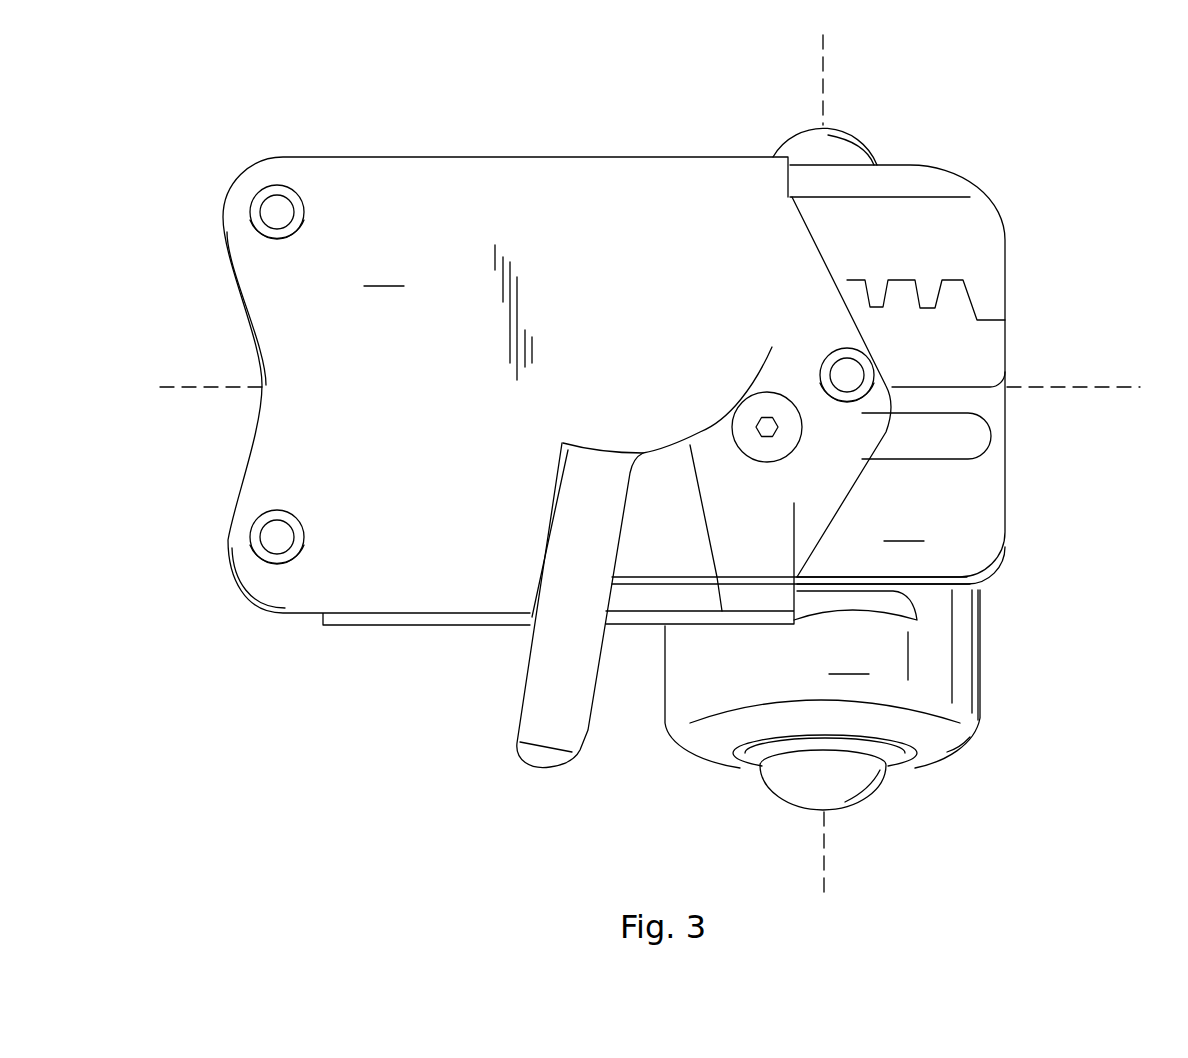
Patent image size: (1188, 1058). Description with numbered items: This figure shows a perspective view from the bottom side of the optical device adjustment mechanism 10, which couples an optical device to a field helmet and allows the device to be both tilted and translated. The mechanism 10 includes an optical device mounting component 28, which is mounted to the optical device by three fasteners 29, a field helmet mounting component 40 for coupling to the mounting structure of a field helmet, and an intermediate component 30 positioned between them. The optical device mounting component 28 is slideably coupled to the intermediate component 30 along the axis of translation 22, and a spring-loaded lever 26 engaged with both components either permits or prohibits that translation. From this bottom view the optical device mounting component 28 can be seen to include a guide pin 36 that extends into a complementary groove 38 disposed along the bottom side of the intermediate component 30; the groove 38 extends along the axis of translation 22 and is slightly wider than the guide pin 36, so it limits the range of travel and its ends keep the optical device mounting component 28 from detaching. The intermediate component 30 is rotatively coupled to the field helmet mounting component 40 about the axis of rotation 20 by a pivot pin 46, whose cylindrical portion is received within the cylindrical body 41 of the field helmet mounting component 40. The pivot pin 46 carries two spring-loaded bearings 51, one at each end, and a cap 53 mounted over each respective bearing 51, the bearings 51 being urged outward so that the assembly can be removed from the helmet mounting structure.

The mechanism 10 is at (673, 477).
The axis of rotation 20 is at (824, 58).
The axis of translation 22 is at (1098, 390).
The spring-loaded lever 26 is at (521, 691).
The optical device mounting component 28 is at (508, 391).
The fasteners 29 is at (262, 200).
The intermediate component 30 is at (897, 374).
The guide pin 36 is at (745, 407).
The groove 38 is at (992, 434).
The field helmet mounting component 40 is at (822, 679).
The cylindrical body 41 is at (983, 606).
The pivot pin 46 is at (866, 140).
The bearings 51 is at (797, 142).
The cap 53 is at (747, 763).